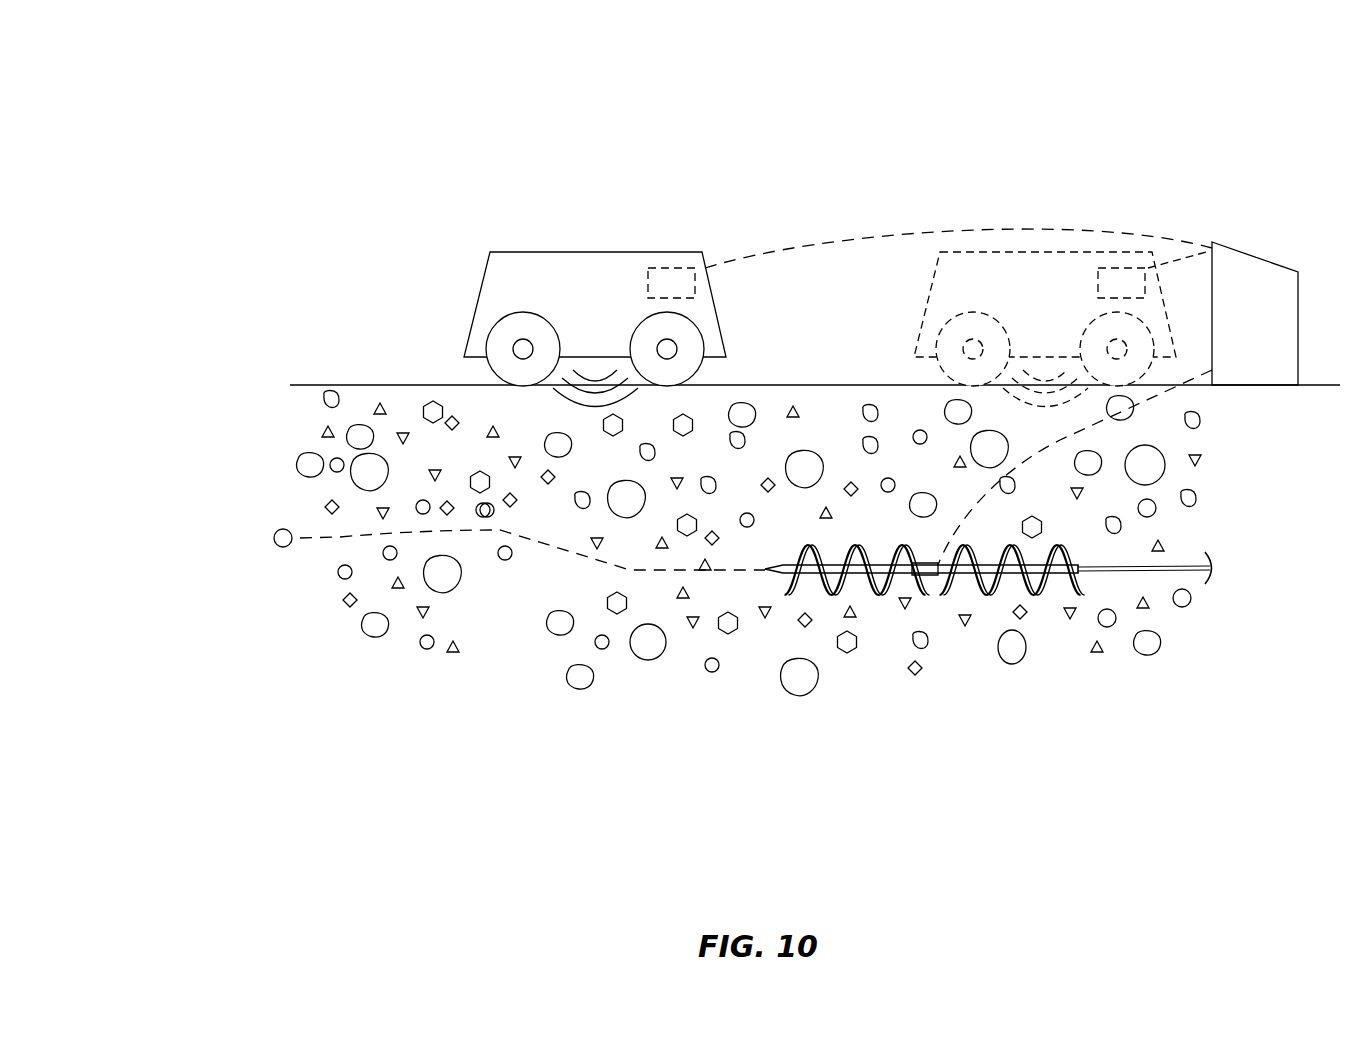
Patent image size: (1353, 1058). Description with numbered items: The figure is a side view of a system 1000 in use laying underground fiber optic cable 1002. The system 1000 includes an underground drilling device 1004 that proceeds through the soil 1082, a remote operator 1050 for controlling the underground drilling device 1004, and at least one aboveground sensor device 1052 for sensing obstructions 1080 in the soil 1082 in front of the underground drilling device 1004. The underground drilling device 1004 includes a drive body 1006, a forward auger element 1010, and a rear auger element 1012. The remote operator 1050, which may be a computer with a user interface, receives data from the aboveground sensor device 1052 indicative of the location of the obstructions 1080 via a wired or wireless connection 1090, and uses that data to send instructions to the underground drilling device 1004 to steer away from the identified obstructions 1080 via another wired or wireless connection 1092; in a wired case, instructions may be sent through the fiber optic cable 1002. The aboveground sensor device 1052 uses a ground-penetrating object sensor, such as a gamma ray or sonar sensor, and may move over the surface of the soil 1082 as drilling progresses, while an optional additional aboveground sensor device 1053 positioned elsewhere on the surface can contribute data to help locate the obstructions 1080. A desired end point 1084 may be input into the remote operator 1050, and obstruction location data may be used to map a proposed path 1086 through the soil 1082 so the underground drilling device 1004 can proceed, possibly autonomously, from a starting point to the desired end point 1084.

The system 1000 is at (192, 114).
The fiber optic cable 1002 is at (1016, 601).
The underground drilling device 1004 is at (984, 660).
The drive body 1006 is at (927, 580).
The forward auger element 1010 is at (857, 580).
The rear auger element 1012 is at (1052, 580).
The remote operator 1050 is at (1238, 250).
The aboveground sensor device 1052 is at (557, 252).
The additional aboveground sensor device 1053 is at (980, 252).
The obstructions 1080 is at (353, 480).
The soil 1082 is at (355, 399).
The desired end point 1084 is at (276, 547).
The proposed path 1086 is at (345, 537).
The wired or wireless connection 1090 is at (787, 254).
The wired or wireless connection 1092 is at (1190, 375).